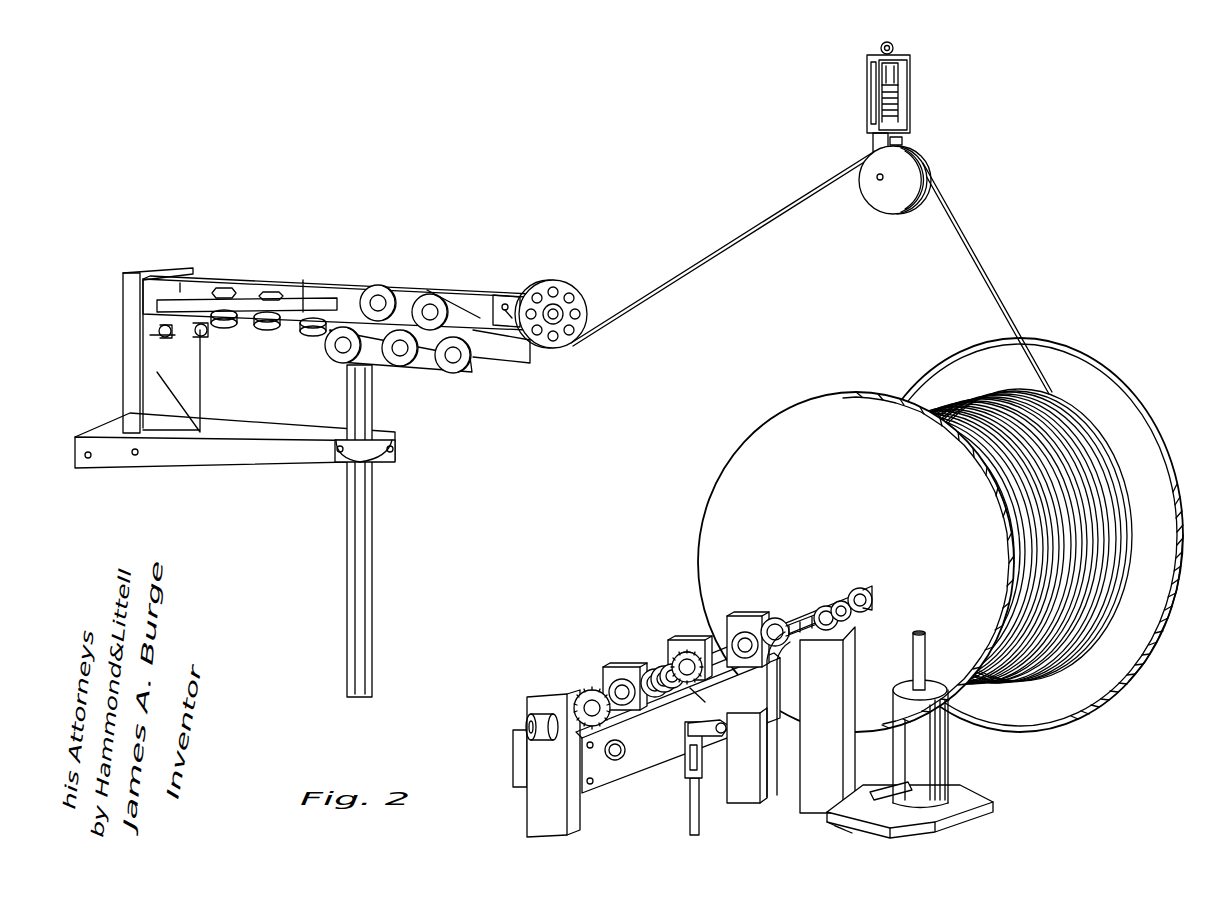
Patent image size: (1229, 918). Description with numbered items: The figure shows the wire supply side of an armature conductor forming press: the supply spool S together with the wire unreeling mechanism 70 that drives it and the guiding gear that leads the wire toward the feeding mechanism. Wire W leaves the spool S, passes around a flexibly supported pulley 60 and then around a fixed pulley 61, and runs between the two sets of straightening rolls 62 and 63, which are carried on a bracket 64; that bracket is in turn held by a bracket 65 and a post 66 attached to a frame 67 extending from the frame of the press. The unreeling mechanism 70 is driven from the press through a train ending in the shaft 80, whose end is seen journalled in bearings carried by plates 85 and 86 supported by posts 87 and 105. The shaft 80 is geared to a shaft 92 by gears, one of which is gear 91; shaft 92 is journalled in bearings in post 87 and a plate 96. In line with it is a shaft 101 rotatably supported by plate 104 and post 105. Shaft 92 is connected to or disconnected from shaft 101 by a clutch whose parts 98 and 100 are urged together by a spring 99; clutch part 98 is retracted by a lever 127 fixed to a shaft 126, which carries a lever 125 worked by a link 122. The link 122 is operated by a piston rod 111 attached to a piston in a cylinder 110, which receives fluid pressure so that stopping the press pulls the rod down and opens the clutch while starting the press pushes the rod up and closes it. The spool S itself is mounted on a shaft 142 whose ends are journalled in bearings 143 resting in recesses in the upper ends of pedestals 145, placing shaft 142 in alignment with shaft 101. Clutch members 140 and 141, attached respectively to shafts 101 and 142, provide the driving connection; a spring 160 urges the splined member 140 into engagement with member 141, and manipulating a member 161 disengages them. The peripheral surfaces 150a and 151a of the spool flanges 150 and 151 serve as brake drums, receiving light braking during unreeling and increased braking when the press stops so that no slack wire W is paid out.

The flexibly supported pulley 60 is at (925, 153).
The fixed pulley 61 is at (562, 342).
The straightening rolls 62 is at (428, 295).
The straightening rolls 63 is at (264, 330).
The bracket 64 is at (290, 280).
The bracket 65 is at (123, 340).
The post 66 is at (375, 403).
The frame 67 is at (110, 418).
The wire unreeling mechanism 70 is at (598, 616).
The shaft 80 is at (625, 757).
The plate 85 is at (620, 772).
The plate 86 is at (513, 765).
The post 87 is at (545, 693).
The gear 91 is at (586, 690).
The shaft 92 is at (525, 718).
The plate 96 is at (622, 667).
The clutch part 98 is at (660, 668).
The spring 99 is at (668, 688).
The clutch part 100 is at (690, 652).
The shaft 101 is at (718, 632).
The plate 104 is at (680, 645).
The post 105 is at (742, 616).
The cylinder 110 is at (893, 735).
The piston rod 111 is at (913, 655).
The link 122 is at (690, 806).
The lever 125 is at (712, 740).
The shaft 126 is at (730, 722).
The lever 127 is at (709, 699).
The clutch member 140 is at (795, 615).
The clutch member 141 is at (823, 606).
The shaft 142 is at (861, 588).
The bearings 143 is at (841, 600).
The pedestals 145 is at (870, 695).
The spool flange 150 is at (745, 462).
The peripheral surface 150a is at (862, 396).
The spool flange 151 is at (1103, 678).
The peripheral surface 151a is at (1168, 626).
The spring 160 is at (774, 618).
The member 161 is at (770, 772).
The supply spool S is at (953, 535).
The wire W is at (978, 253).